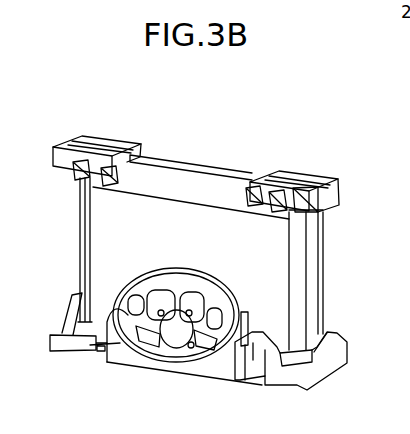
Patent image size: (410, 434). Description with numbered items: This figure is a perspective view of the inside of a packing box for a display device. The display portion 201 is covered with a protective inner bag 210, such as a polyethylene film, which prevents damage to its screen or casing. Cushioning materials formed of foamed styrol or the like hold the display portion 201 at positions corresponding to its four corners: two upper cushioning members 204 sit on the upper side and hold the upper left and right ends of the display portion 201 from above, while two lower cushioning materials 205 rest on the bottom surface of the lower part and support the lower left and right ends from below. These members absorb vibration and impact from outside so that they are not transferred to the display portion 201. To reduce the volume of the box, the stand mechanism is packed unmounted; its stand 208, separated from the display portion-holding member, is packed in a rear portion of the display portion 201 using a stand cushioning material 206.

The display portion 201 is at (200, 210).
The inner bag 210 is at (212, 210).
The upper cushioning member 204 is at (96, 142).
The lower cushioning material 205 is at (80, 322).
The stand cushioning material 206 is at (118, 344).
The stand 208 is at (187, 348).